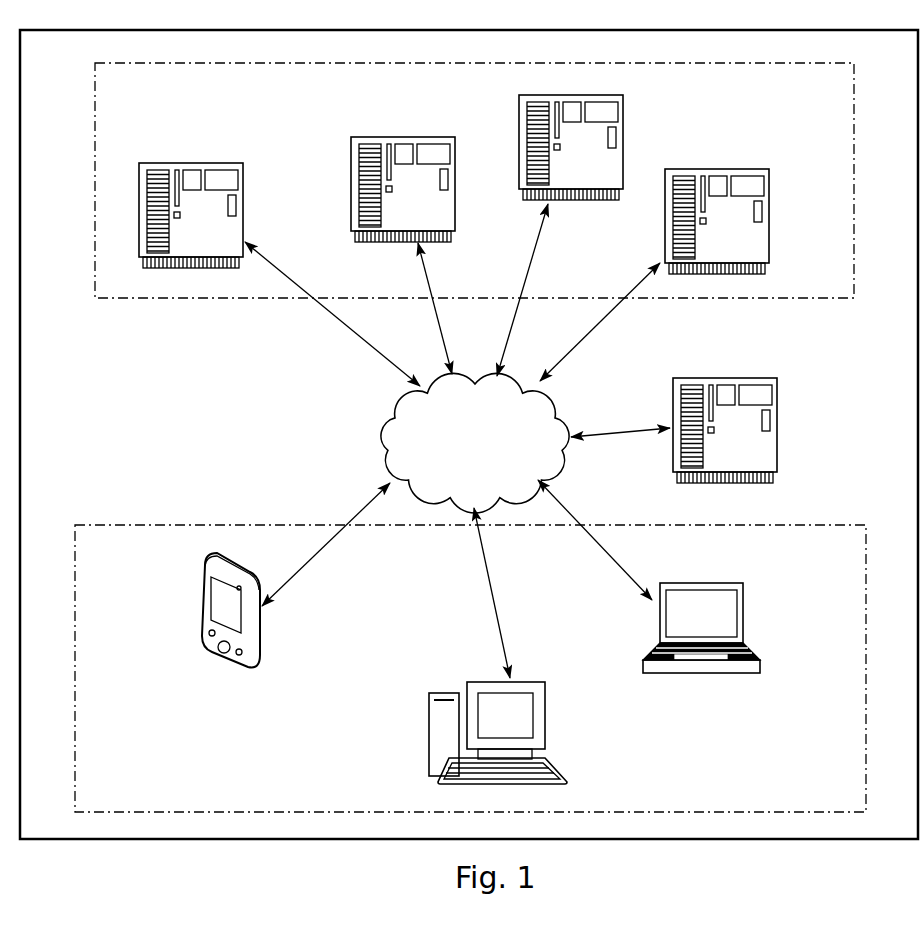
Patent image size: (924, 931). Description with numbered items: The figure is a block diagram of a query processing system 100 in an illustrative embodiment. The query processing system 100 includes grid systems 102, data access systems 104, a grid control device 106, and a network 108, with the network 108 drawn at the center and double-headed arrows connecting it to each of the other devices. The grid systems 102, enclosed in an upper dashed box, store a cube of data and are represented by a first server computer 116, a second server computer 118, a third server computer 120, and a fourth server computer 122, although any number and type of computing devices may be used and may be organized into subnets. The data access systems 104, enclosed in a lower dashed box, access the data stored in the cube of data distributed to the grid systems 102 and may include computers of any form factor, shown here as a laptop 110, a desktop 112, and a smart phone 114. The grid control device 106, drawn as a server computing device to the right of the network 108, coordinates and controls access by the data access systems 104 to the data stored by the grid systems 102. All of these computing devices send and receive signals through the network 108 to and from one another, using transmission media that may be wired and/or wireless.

The query processing system 100 is at (118, 413).
The grid systems 102 is at (823, 280).
The data access systems 104 is at (158, 778).
The grid control device 106 is at (778, 430).
The network 108 is at (450, 458).
The laptop 110 is at (742, 615).
The desktop 112 is at (429, 726).
The smart phone 114 is at (205, 590).
The first server computer 116 is at (756, 168).
The second server computer 118 is at (625, 114).
The third server computer 120 is at (403, 135).
The fourth server computer 122 is at (180, 162).